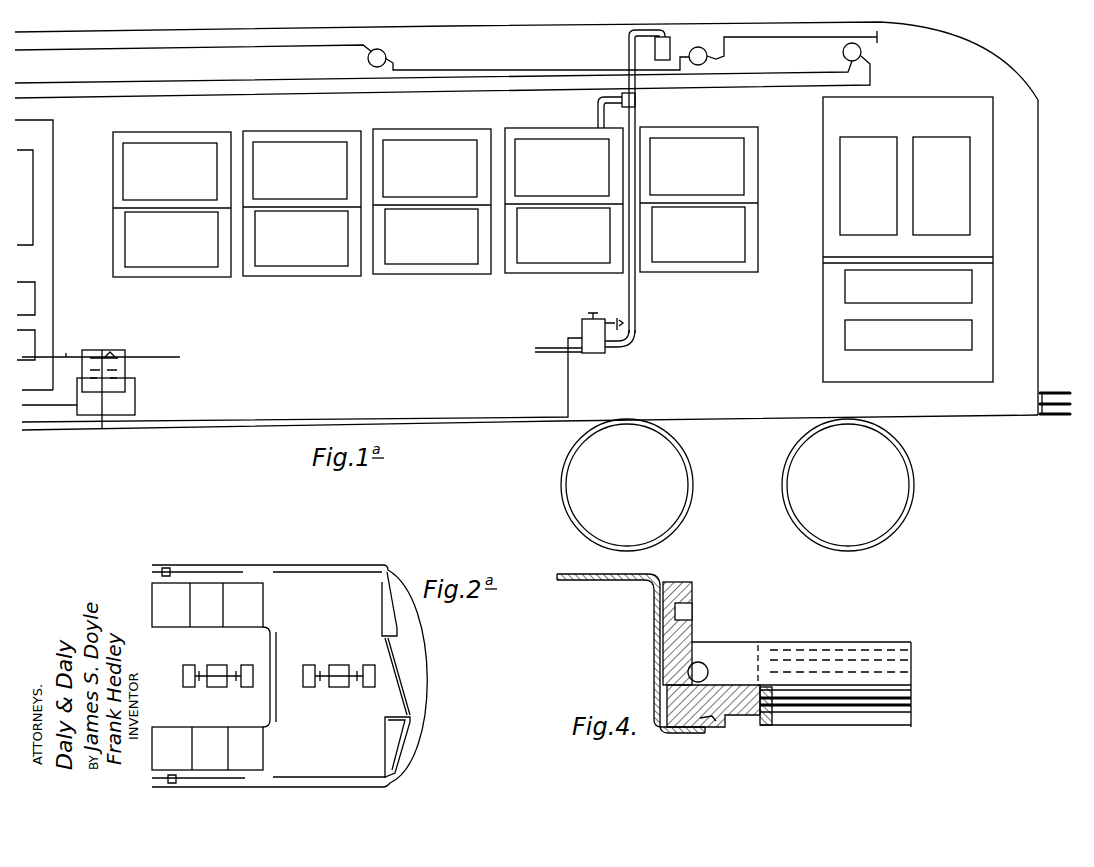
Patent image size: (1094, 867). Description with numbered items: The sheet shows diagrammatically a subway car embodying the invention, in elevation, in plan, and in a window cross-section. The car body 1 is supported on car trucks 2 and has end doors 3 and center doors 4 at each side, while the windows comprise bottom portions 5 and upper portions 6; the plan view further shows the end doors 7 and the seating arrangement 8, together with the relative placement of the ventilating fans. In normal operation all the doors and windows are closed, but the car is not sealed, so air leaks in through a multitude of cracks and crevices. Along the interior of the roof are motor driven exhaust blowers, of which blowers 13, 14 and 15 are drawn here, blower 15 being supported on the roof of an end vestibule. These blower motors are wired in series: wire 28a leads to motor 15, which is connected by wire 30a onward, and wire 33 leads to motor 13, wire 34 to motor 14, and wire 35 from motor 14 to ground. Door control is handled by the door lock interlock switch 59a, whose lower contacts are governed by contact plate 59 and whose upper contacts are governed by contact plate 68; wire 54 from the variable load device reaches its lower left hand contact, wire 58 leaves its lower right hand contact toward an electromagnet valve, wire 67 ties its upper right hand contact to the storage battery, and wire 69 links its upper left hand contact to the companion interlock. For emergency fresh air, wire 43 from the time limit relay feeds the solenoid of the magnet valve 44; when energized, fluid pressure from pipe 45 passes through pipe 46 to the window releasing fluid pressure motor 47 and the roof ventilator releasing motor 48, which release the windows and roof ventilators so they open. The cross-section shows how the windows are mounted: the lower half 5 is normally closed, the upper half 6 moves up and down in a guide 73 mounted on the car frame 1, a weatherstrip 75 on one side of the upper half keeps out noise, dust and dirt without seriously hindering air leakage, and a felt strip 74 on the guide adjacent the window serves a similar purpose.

In FIG. 1A, the car body 1 is at (992, 414).
In FIG. 4, the car body 1 is at (656, 634).
In FIG. 1A, the car trucks 2 is at (750, 488).
In FIG. 1A, the end doors 3 is at (928, 376).
In FIG. 2A, the end doors 3 is at (335, 565).
In FIG. 1A, the center doors 4 is at (34, 255).
In FIG. 1A, the bottom window portion 5 is at (435, 235).
In FIG. 4, the bottom window portion 5 is at (821, 642).
In FIG. 1A, the upper window portion 6 is at (435, 202).
In FIG. 4, the upper window portion 6 is at (818, 727).
In FIG. 2A, the end doors 7 is at (398, 667).
In FIG. 2A, the seating arrangement 8 is at (233, 724).
In FIG. 1A, the motor driven exhaust blower 13 is at (386, 52).
In FIG. 1A, the motor driven exhaust blower 14 is at (716, 60).
In FIG. 2A, the motor driven exhaust blower 14 is at (222, 660).
In FIG. 1A, the motor driven exhaust blower 15 is at (843, 52).
In FIG. 2A, the motor driven exhaust blower 15 is at (343, 660).
In FIG. 1A, the wire 28a is at (257, 85).
In FIG. 1A, the wire 30a is at (258, 97).
In FIG. 1A, the wire 33 is at (226, 46).
In FIG. 1A, the wire 34 is at (527, 70).
In FIG. 1A, the wire 35 is at (763, 40).
In FIG. 1A, the wire 43 is at (38, 430).
In FIG. 1A, the magnet valve 44 is at (607, 352).
In FIG. 1A, the pipe 45 is at (543, 354).
In FIG. 1A, the pipe 46 is at (637, 316).
In FIG. 1A, the window releasing fluid pressure motor 47 is at (598, 117).
In FIG. 1A, the roof ventilator releasing motor 48 is at (670, 55).
In FIG. 1A, the wire 54 is at (42, 403).
In FIG. 1A, the wire 58 is at (136, 395).
In FIG. 1A, the contact plate 59 is at (120, 369).
In FIG. 1A, the door lock interlock switch 59a is at (118, 388).
In FIG. 1A, the wire 67 is at (162, 357).
In FIG. 1A, the contact plate 68 is at (106, 350).
In FIG. 1A, the wire 69 is at (66, 360).
In FIG. 4, the guide 73 is at (692, 590).
In FIG. 4, the felt strip 74 is at (700, 665).
In FIG. 4, the weatherstrip 75 is at (712, 722).